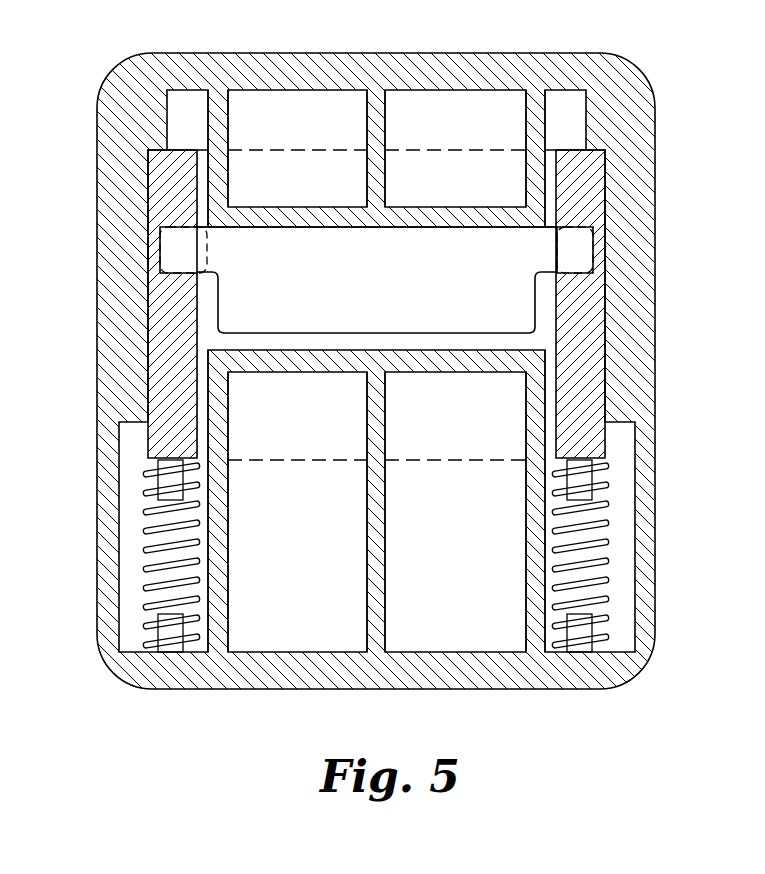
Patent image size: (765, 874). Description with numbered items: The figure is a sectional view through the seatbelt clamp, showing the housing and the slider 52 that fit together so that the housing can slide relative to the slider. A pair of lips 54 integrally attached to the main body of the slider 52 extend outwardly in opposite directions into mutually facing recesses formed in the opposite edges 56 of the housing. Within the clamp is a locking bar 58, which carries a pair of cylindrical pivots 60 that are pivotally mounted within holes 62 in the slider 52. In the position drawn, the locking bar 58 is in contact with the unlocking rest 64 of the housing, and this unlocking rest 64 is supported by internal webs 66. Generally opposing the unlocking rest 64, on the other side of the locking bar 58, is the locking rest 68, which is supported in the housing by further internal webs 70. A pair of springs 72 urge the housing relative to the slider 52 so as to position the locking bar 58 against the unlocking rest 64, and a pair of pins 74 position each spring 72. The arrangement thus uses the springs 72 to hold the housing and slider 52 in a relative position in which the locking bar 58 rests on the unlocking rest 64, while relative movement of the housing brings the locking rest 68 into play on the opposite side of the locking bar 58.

The slider 52 is at (465, 182).
The lips 54 is at (163, 177).
The edges of housing 56 is at (153, 137).
The locking bar 58 is at (262, 278).
The cylindrical pivots 60 is at (173, 234).
The holes 62 is at (175, 242).
The unlocking rest 64 is at (547, 213).
The internal webs 66 is at (215, 123).
The locking rest 68 is at (227, 346).
The internal webs 70 is at (220, 640).
The springs 72 is at (145, 572).
The pins 74 is at (172, 630).